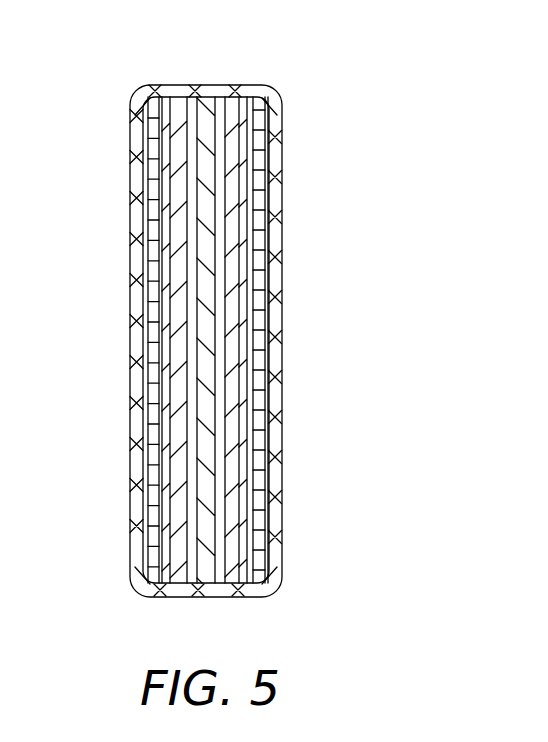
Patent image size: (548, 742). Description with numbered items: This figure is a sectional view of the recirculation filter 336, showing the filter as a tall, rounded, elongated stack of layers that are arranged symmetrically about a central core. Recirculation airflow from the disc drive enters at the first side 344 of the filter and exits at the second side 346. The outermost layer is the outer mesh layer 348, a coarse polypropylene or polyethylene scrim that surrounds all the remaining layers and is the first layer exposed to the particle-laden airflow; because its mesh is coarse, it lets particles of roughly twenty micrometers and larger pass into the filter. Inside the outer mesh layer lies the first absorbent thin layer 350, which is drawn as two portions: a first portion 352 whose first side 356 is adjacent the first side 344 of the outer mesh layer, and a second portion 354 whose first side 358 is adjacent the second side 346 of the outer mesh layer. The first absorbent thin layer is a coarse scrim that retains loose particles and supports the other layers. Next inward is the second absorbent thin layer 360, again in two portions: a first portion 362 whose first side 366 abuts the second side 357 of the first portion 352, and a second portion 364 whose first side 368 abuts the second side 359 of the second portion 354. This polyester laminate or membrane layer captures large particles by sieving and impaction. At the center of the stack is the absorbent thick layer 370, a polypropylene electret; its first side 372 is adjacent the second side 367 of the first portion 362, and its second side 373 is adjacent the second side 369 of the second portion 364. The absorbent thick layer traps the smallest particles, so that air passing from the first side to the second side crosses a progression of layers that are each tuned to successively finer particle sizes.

The recirculation filter 336 is at (392, 118).
The first side 344 is at (136, 284).
The second side 346 is at (283, 320).
The outer mesh layer 348 is at (137, 416).
The first absorbent thin layer 350 is at (142, 346).
The first portion 352 is at (153, 175).
The second portion 354 is at (258, 168).
The first side 356 is at (161, 242).
The second side 357 is at (146, 205).
The first side 358 is at (268, 237).
The second side 359 is at (253, 276).
The second absorbent thin layer 360 is at (173, 104).
The first portion 362 is at (180, 152).
The second portion 364 is at (232, 140).
The first side 366 is at (153, 560).
The second side 367 is at (186, 520).
The first side 368 is at (257, 562).
The second side 369 is at (237, 522).
The absorbent thick layer 370 is at (205, 212).
The first side 372 is at (192, 462).
The second side 373 is at (225, 478).